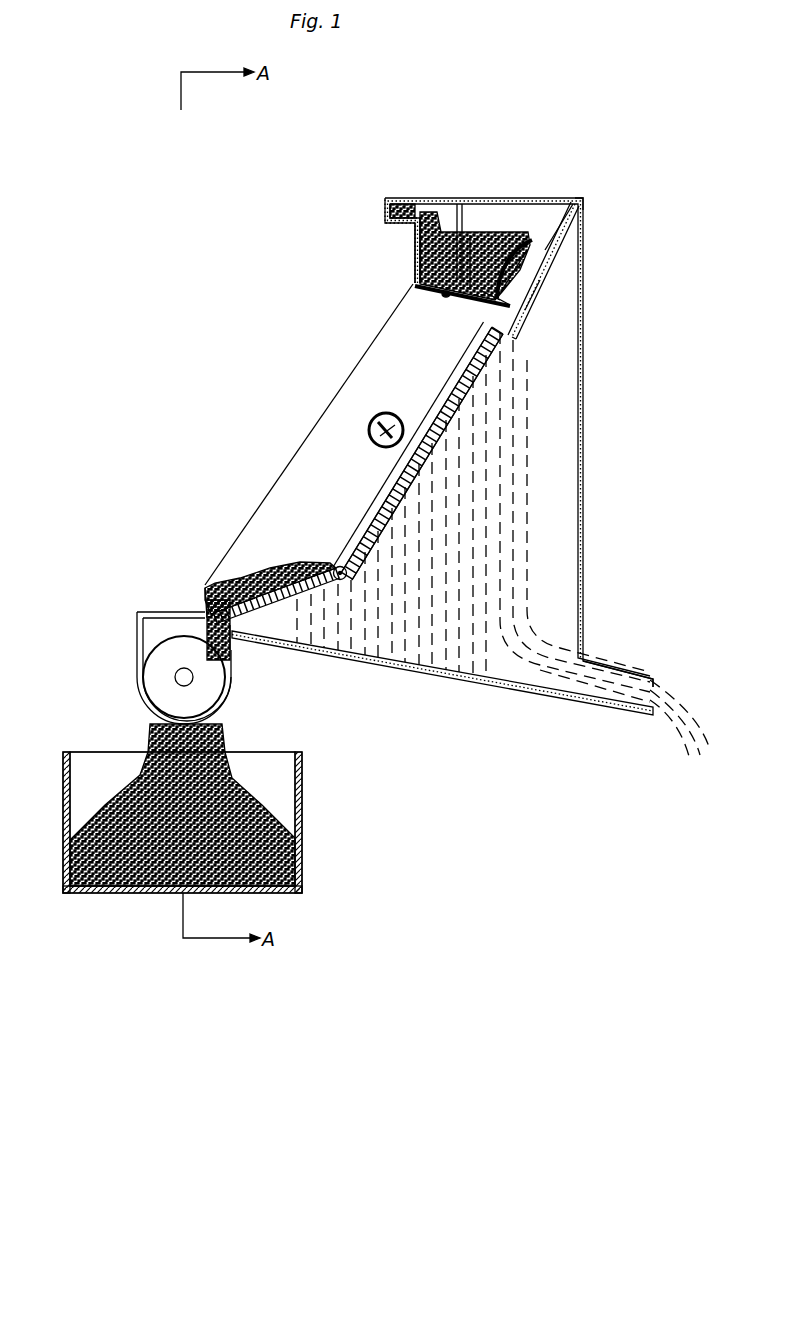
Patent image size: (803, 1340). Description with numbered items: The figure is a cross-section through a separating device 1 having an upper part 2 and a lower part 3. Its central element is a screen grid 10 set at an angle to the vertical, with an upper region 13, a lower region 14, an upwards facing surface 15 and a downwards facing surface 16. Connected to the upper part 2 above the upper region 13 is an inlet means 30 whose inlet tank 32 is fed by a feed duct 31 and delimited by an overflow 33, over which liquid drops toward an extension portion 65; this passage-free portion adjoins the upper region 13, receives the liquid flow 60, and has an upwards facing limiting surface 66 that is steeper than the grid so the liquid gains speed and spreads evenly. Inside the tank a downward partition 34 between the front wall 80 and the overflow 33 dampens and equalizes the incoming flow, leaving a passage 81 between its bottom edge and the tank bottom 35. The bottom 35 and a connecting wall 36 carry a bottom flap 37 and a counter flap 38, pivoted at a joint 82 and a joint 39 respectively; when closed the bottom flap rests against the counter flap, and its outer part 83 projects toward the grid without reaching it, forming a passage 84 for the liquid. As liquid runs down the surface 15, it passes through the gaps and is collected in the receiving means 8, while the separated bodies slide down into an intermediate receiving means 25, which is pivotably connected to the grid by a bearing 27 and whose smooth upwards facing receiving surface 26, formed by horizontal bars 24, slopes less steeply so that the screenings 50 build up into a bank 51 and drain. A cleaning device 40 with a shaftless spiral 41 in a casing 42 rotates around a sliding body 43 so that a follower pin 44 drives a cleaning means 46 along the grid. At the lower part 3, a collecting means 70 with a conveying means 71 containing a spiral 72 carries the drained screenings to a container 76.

The separating device 1 is at (376, 171).
The upper part 2 is at (579, 228).
The lower part 3 is at (342, 583).
The receiving means for drained liquid 8 is at (503, 640).
The screen grid 10 is at (462, 410).
The upper region of the screen grid 13 is at (506, 340).
The lower region of the screen grid 14 is at (358, 550).
The upwards facing surface 15 is at (393, 500).
The downwards facing surface 16 is at (372, 510).
The bars 24 is at (266, 617).
The intermediate receiving means 25 is at (310, 590).
The upwards facing receiving surface 26 is at (308, 570).
The bearing 27 is at (352, 578).
The inlet means 30 is at (543, 200).
The feed duct 31 is at (392, 206).
The inlet tank 32 is at (418, 262).
The overflow 33 is at (540, 244).
The partition 34 is at (453, 224).
The bottom of the tank 35 is at (422, 292).
The connecting wall 36 is at (532, 262).
The bottom flap 37 is at (478, 294).
The counter flap 38 is at (540, 292).
The joint 39 is at (530, 280).
The cleaning device 40 is at (350, 425).
The shaftless spiral 41 is at (369, 435).
The casing 42 is at (378, 425).
The sliding body 43 is at (388, 428).
The follower pin 44 is at (392, 430).
The cleaning means 46 is at (432, 455).
The screenings 50 is at (235, 583).
The bank of screenings 51 is at (210, 588).
The liquid flow 60 is at (450, 230).
The extension portion 65 is at (535, 285).
The upwards facing limiting surface 66 is at (578, 203).
The collecting means 70 is at (128, 625).
The conveying means 71 is at (148, 678).
The spiral 72 is at (150, 692).
The container 76 is at (302, 820).
The front wall 80 is at (418, 240).
The passage 81 is at (478, 232).
The joint 82 is at (446, 298).
The outer part of the bottom flap 83 is at (522, 303).
The passage 84 is at (522, 328).